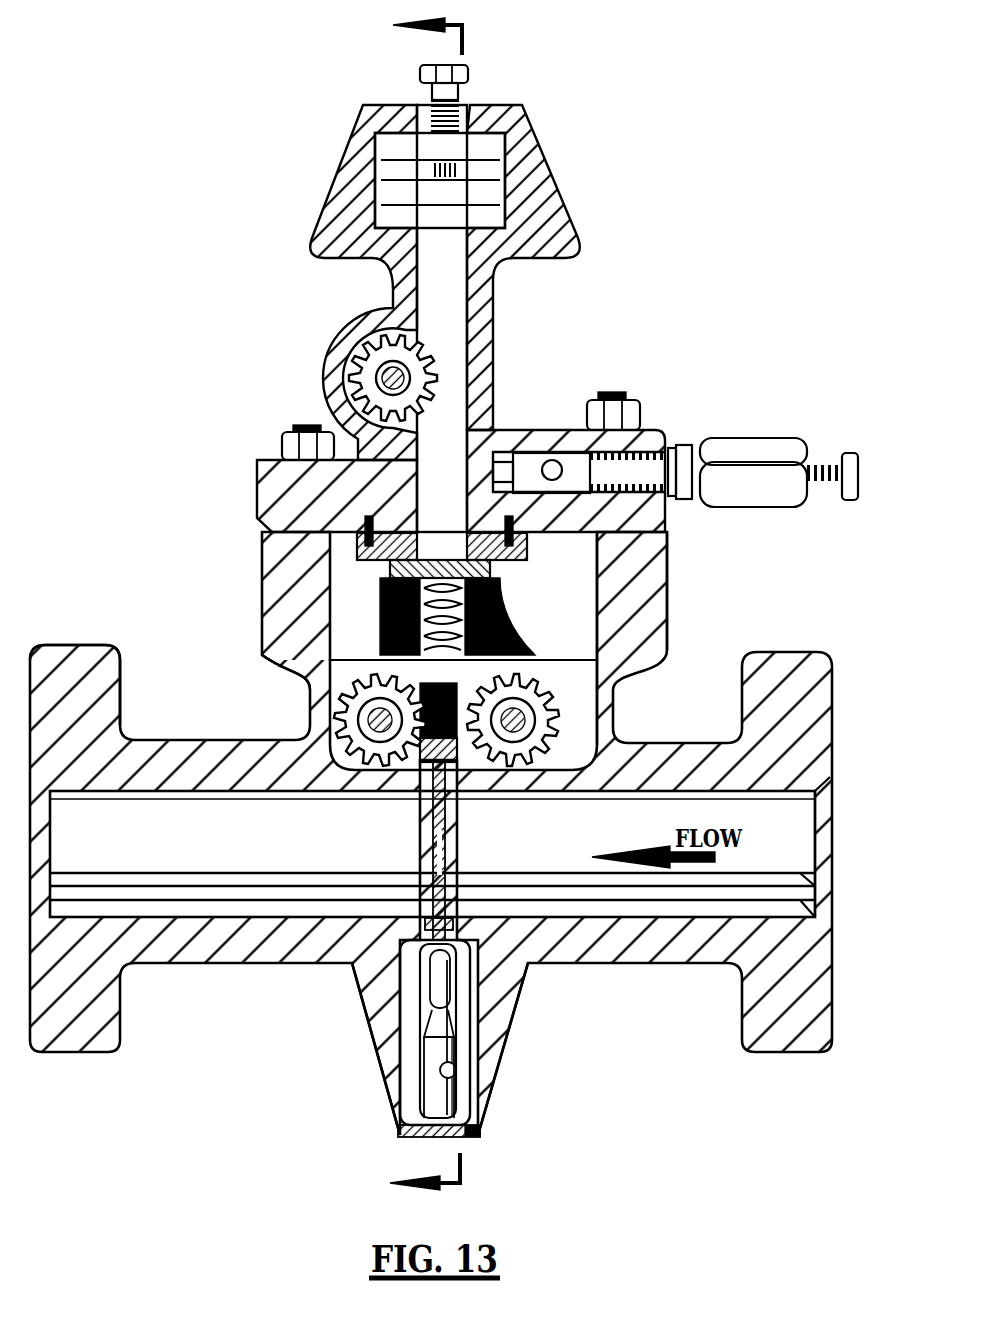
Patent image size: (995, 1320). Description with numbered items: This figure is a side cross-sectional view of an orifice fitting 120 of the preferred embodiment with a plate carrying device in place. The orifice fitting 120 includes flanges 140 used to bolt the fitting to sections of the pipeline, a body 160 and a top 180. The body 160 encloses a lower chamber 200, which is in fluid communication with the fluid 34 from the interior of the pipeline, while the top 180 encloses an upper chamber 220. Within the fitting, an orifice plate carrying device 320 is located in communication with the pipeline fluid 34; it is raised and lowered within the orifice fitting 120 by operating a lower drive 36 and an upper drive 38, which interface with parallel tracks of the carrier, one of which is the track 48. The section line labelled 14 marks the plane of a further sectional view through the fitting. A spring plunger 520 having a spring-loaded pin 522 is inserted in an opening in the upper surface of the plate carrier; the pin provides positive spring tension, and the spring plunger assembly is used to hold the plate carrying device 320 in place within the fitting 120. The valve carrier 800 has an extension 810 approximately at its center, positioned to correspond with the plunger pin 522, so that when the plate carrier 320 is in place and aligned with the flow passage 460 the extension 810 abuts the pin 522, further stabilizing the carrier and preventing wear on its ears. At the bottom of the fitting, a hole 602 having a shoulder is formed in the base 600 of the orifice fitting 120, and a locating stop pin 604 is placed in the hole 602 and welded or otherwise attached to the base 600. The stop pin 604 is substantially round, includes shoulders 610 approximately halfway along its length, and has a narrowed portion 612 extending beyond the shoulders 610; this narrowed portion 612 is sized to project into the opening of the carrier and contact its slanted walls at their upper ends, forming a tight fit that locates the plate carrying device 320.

The section line 14- 14 is at (416, 604).
The upper chamber 220 is at (450, 285).
The upper drive 38 is at (345, 355).
The top 180 is at (478, 350).
The lower chamber 200 is at (567, 562).
The body 160 is at (633, 570).
The orifice fitting 120 is at (777, 625).
The flanges 140 is at (57, 657).
The valve carrier 800 is at (393, 660).
The extension 810 is at (262, 653).
The lower drive 36 is at (333, 718).
The spring-loaded pin 522 is at (498, 622).
The spring plunger 520 is at (505, 645).
The fluid 34 is at (326, 848).
The flow passage 460 is at (790, 895).
The track 48 is at (470, 1000).
The orifice plate carrying device 320 is at (460, 957).
The narrowed portion 612 is at (430, 1015).
The shoulders 610 is at (455, 1035).
The hole 602 is at (458, 1078).
The locating stop pin 604 is at (425, 1112).
The base 600 is at (478, 1138).